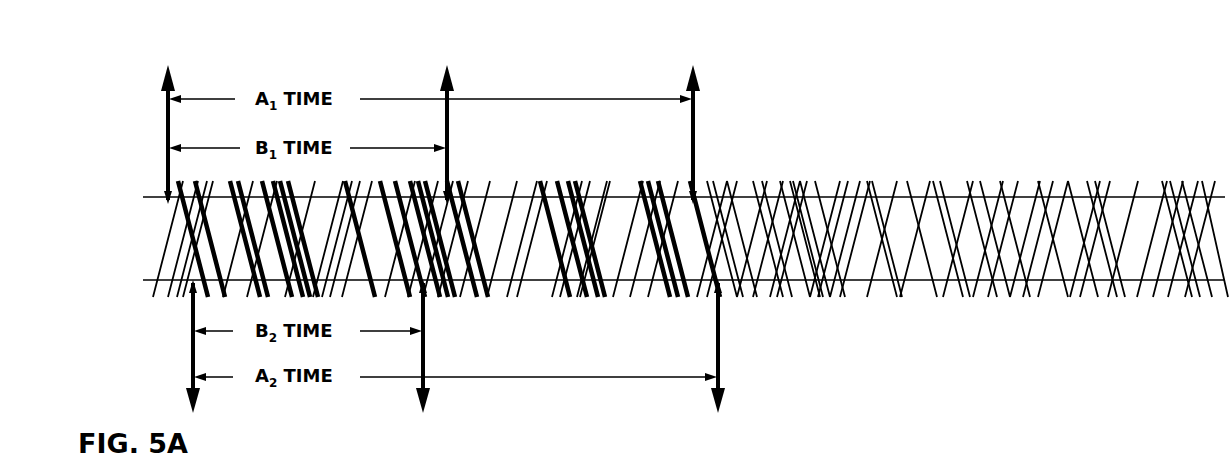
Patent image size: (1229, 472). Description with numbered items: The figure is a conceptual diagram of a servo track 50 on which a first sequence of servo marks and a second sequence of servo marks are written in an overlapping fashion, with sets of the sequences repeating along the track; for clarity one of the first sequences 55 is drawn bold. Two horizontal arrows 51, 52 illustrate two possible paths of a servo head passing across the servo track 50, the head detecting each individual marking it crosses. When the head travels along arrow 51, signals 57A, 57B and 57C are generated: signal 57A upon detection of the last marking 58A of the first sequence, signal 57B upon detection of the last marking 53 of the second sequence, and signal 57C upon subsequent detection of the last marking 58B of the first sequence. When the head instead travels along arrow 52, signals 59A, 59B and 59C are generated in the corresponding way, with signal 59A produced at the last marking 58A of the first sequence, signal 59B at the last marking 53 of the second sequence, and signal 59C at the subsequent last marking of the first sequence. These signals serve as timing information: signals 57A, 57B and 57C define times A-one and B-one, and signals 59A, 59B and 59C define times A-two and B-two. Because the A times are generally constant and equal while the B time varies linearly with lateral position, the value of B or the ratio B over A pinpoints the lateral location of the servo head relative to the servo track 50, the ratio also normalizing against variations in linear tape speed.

The servo track 50 is at (968, 160).
The arrow 51 is at (136, 197).
The arrow 52 is at (136, 280).
The last marking of the second sequence 53 is at (438, 182).
The first sequence 55 is at (486, 325).
The signal 57A is at (163, 87).
The signal 57B is at (442, 87).
The signal 57C is at (688, 87).
The last marking of the first sequence 58A is at (162, 202).
The last marking of the first sequence 58B is at (710, 197).
The signal 59A is at (200, 391).
The signal 59B is at (430, 391).
The signal 59C is at (725, 391).